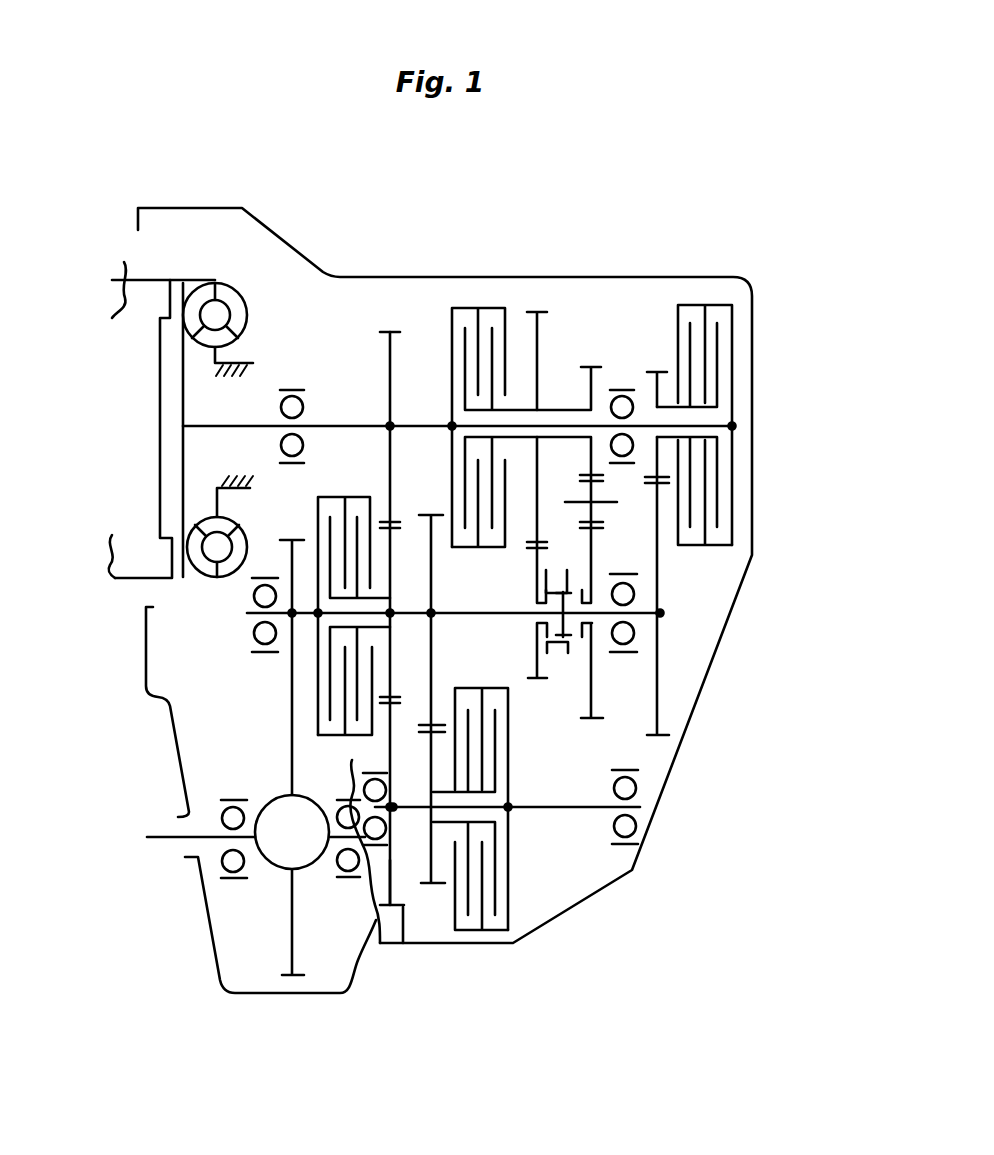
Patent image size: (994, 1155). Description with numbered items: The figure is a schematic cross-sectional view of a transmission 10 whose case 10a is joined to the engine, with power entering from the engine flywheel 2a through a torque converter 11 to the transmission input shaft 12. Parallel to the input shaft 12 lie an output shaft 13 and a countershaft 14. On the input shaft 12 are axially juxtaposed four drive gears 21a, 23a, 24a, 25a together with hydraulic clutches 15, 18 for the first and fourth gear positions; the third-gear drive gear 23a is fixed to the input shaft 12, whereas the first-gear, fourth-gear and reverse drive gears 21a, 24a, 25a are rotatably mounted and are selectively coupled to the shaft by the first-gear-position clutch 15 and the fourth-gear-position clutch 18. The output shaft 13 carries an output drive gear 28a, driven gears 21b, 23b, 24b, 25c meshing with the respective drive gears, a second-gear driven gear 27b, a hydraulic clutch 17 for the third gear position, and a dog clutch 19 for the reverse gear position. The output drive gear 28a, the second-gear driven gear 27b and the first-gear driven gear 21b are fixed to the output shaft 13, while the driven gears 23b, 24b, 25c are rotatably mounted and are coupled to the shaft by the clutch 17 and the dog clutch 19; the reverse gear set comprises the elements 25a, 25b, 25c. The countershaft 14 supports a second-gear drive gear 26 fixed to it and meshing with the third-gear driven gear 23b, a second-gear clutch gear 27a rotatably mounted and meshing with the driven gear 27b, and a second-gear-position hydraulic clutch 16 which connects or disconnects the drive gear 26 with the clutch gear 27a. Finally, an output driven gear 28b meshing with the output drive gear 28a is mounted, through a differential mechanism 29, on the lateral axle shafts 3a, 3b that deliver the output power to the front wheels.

The transmission 10 is at (650, 127).
The case 10a is at (752, 507).
The flywheel 2a is at (124, 265).
The torque converter 11 is at (240, 313).
The transmission input shaft 12 is at (336, 426).
The output shaft 13 is at (460, 615).
The countershaft 14 is at (553, 810).
The first-gear-position hydraulic clutch 15 is at (697, 300).
The second-gear-position hydraulic clutch 16 is at (498, 933).
The third-gear-position hydraulic clutch 17 is at (338, 497).
The fourth-gear-position hydraulic clutch 18 is at (468, 308).
The dog clutch 19 is at (570, 660).
The first-gear-position drive gear 21a is at (657, 370).
The first-gear-position driven gear 21b is at (660, 738).
The third-gear-position drive gear 23a is at (388, 330).
The third-gear-position driven gear 23b is at (396, 530).
The fourth-gear-position drive gear 24a is at (540, 305).
The fourth-gear-position driven gear 24b is at (537, 681).
The reverse-gear-position drive gear 25a is at (591, 366).
The reverse gear set element 25b is at (600, 520).
The reverse-gear-position driven gear 25c is at (590, 720).
The second-gear-position drive gear 26 is at (400, 910).
The second-gear-position clutch gear 27a is at (433, 888).
The second-gear-position driven gear 27b is at (430, 514).
The output drive gear 28a is at (287, 535).
The output driven gear 28b is at (302, 978).
The differential mechanism 29 is at (282, 815).
The axle shaft 3a is at (167, 840).
The axle shaft 3b is at (352, 842).